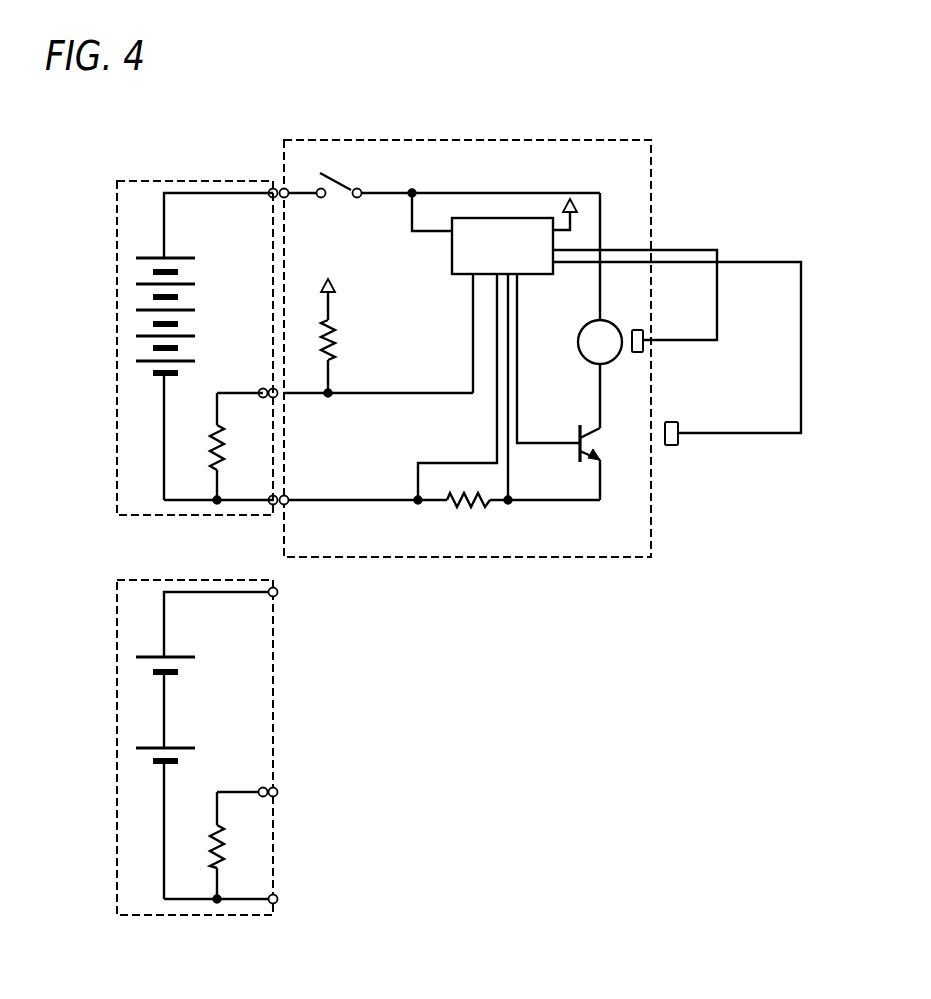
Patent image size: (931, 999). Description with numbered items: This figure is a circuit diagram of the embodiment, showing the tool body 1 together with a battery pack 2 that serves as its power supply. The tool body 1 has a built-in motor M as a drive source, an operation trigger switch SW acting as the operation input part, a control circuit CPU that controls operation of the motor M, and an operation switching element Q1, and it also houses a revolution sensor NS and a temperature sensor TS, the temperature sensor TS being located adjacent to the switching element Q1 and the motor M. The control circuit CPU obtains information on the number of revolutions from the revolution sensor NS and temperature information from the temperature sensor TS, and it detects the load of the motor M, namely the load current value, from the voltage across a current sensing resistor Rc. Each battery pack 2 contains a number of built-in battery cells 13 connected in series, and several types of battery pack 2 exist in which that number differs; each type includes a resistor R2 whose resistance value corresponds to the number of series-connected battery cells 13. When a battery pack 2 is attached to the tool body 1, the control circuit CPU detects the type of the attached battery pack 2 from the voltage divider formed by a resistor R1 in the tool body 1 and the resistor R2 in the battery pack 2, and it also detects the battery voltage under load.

The tool body 1 is at (651, 141).
The battery pack 2 is at (117, 181).
The battery cell 13 is at (188, 293).
The operation trigger switch SW is at (339, 204).
The control circuit CPU is at (626, 316).
The resistor R1 is at (347, 336).
The resistor R2 is at (236, 646).
The current sensing resistor Rc is at (468, 520).
The motor M is at (600, 374).
The operation switching element Q1 is at (607, 462).
The revolution sensor NS is at (645, 333).
The temperature sensor TS is at (678, 423).